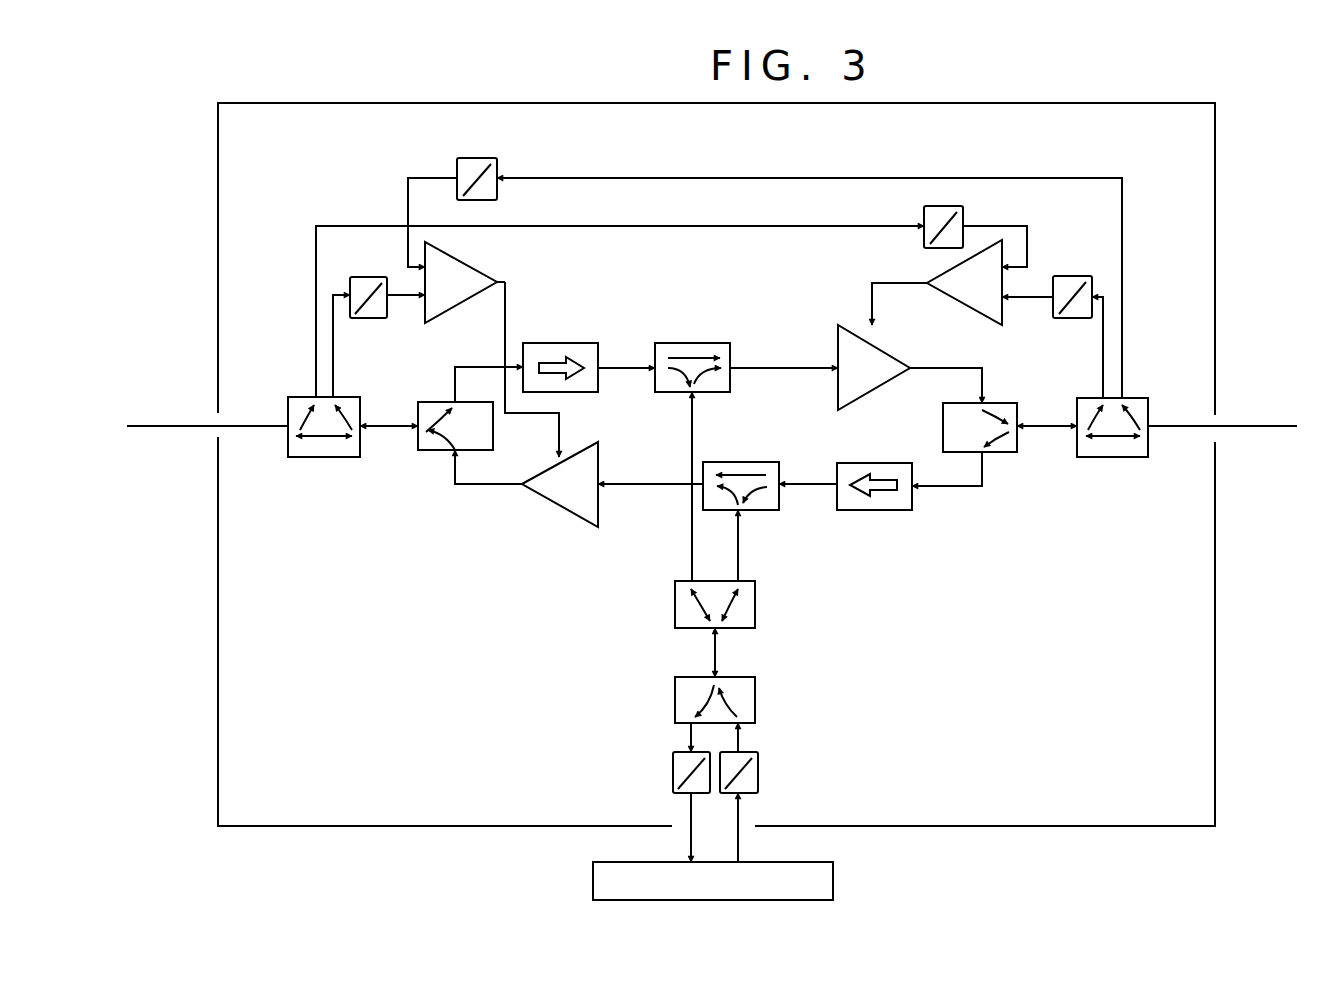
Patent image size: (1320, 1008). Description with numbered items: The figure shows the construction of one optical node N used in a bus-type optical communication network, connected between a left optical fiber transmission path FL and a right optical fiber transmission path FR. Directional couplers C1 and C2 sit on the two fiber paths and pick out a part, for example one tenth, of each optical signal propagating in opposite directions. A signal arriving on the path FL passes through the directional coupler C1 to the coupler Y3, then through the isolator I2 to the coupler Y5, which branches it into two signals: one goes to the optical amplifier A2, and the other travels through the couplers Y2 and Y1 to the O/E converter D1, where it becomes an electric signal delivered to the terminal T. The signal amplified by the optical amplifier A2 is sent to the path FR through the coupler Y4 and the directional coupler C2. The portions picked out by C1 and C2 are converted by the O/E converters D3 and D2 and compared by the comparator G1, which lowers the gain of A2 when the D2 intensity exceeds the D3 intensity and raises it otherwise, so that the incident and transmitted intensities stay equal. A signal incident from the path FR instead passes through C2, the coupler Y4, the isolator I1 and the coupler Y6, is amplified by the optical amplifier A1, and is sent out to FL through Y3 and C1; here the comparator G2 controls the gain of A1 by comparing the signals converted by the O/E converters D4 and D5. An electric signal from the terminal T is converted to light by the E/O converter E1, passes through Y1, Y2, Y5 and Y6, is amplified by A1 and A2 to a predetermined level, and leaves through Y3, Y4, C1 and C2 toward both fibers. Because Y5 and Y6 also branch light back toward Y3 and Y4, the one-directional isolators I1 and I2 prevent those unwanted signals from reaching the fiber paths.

The optical node N is at (1153, 103).
The optical fiber transmission path FL is at (143, 426).
The optical fiber transmission path FR is at (1268, 426).
The directional coupler C1 is at (316, 457).
The directional coupler C2 is at (1110, 457).
The coupler Y1 is at (755, 696).
The coupler Y2 is at (755, 600).
The coupler Y3 is at (430, 450).
The coupler Y4 is at (998, 452).
The coupler Y5 is at (684, 343).
The coupler Y6 is at (736, 462).
The optical isolator I1 is at (872, 510).
The optical isolator I2 is at (554, 343).
The optical amplifier A1 is at (562, 507).
The optical amplifier A2 is at (870, 392).
The comparator G1 is at (949, 296).
The comparator G2 is at (476, 266).
The O/E converter D1 is at (673, 767).
The O/E converter D2 is at (1070, 276).
The O/E converter D3 is at (924, 244).
The O/E converter D4 is at (470, 158).
The O/E converter D5 is at (370, 318).
The E/O converter E1 is at (758, 766).
The terminal T is at (833, 878).